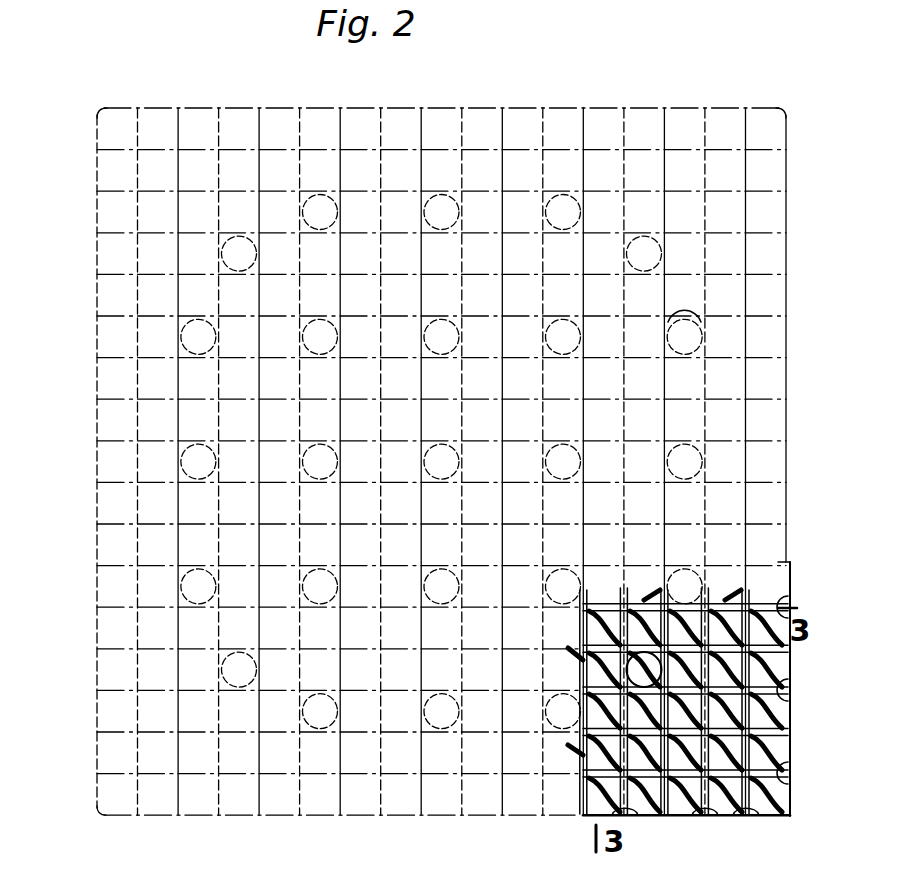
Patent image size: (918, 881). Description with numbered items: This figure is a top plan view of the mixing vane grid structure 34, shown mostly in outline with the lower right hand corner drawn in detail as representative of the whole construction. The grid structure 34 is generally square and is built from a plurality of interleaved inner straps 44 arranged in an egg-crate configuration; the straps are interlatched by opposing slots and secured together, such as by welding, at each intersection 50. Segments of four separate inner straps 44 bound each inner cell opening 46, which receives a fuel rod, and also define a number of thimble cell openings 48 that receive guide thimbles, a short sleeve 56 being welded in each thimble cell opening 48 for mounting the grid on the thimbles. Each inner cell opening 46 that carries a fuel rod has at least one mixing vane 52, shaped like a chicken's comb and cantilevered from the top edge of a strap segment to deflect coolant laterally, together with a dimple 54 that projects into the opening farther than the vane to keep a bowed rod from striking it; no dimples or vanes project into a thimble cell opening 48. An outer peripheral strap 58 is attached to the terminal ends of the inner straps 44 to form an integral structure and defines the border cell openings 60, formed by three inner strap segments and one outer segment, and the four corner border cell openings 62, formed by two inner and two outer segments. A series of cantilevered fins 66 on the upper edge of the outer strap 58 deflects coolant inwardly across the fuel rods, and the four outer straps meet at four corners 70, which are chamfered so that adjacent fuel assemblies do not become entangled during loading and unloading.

The grid structure 34 is at (476, 78).
The inner straps 44 is at (630, 150).
The inner cell openings 46 is at (160, 498).
The thimble cell openings 48 is at (700, 318).
The intersection 50 is at (500, 190).
The mixing vane 52 is at (580, 738).
The dimple 54 is at (757, 668).
The sleeve 56 is at (232, 245).
The outer peripheral strap 58 is at (403, 108).
The border cell openings 60 is at (157, 127).
The corner border cell openings 62 is at (115, 128).
The fins 66 is at (770, 688).
The corners 70 is at (108, 108).